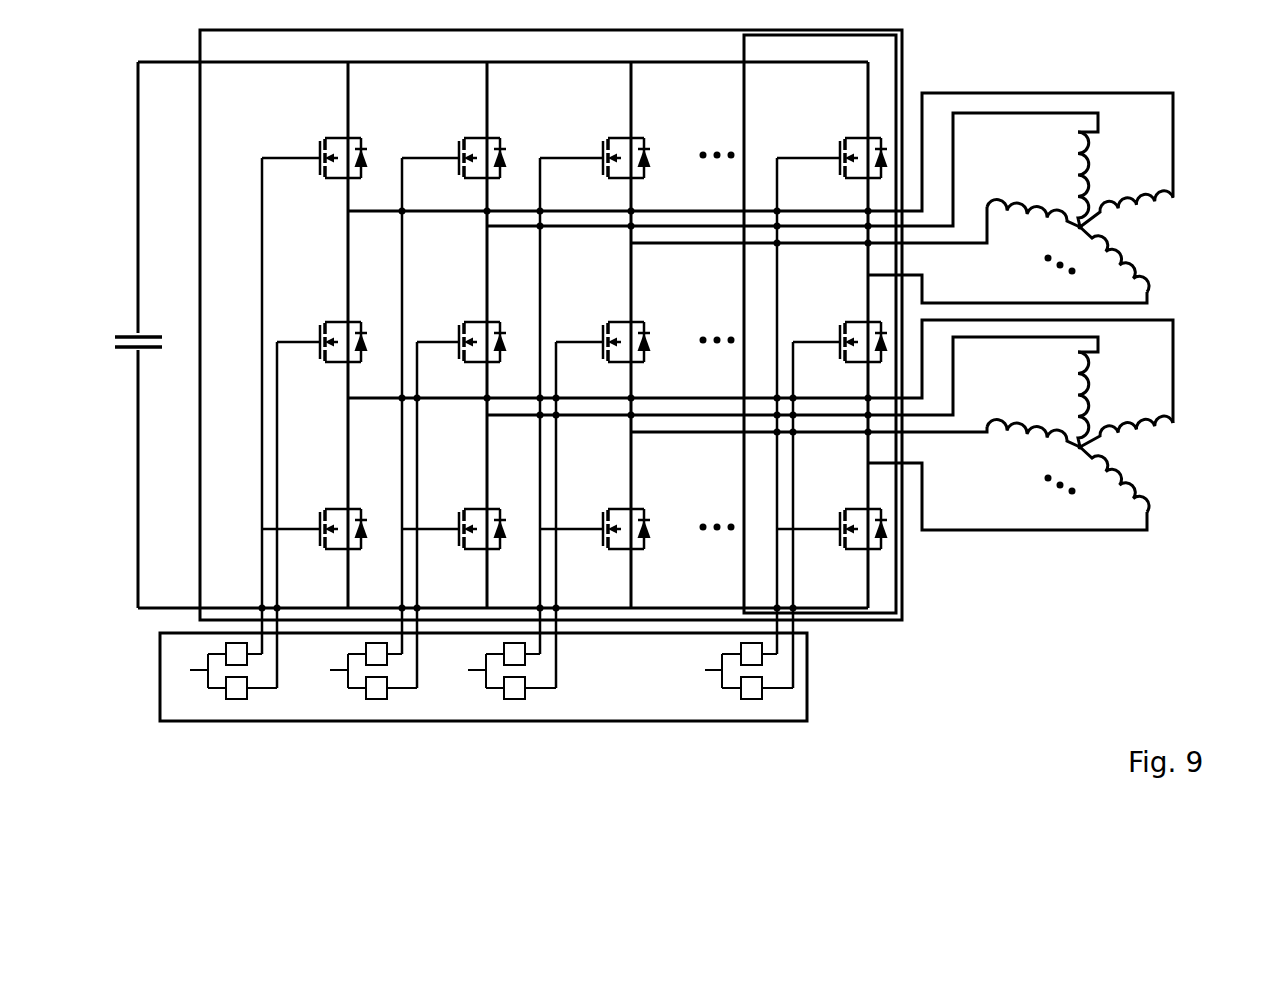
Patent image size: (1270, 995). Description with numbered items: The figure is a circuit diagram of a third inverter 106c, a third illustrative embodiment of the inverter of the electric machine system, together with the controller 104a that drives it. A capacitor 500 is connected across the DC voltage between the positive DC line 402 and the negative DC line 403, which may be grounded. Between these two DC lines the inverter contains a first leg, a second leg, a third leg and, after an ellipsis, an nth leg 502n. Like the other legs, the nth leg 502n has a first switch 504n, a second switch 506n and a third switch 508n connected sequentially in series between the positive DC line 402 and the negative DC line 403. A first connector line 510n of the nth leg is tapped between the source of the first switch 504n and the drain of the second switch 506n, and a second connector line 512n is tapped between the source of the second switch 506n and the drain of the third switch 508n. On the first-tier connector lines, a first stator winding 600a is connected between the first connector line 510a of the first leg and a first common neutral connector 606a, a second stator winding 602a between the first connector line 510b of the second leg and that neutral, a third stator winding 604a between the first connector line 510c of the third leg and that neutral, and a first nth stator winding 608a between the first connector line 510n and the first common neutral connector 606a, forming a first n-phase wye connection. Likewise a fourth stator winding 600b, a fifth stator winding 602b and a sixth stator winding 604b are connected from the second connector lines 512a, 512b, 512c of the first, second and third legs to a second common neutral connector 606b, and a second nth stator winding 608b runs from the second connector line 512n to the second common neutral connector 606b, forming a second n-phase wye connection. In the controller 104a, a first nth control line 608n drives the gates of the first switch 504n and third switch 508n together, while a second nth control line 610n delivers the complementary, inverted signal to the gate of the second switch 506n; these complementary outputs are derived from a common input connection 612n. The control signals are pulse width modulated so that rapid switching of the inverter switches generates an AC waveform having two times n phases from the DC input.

The third inverter 106c is at (268, 96).
The controller 104a is at (216, 718).
The positive DC line 402 is at (153, 67).
The negative DC line 403 is at (176, 606).
The capacitor 500 is at (153, 333).
The nth leg 502n is at (794, 89).
The first switch 504n is at (838, 140).
The second switch 506n is at (838, 335).
The third switch 508n is at (845, 512).
The first connector line of first leg 510a is at (945, 90).
The first connector line of second leg 510b is at (1012, 112).
The first connector line of third leg 510c is at (968, 247).
The first connector line of nth leg 510n is at (922, 296).
The second connector line of first leg 512a is at (1178, 338).
The second connector line of second leg 512b is at (930, 418).
The second connector line of third leg 512c is at (970, 435).
The second connector line of nth leg 512n is at (1075, 535).
The first stator winding 600a is at (1145, 196).
The second stator winding 602a is at (1068, 143).
The third stator winding 604a is at (1012, 213).
The first common neutral connector 606a is at (1085, 226).
The first nth stator winding 608a is at (1138, 275).
The fourth stator winding 600b is at (1143, 420).
The fifth stator winding 602b is at (1068, 368).
The sixth stator winding 604b is at (1020, 435).
The second common neutral connector 606b is at (1085, 447).
The second nth stator winding 608b is at (1138, 500).
The first nth control line 608n is at (775, 625).
The second nth control line 610n is at (797, 625).
The control input signal 612n is at (705, 670).